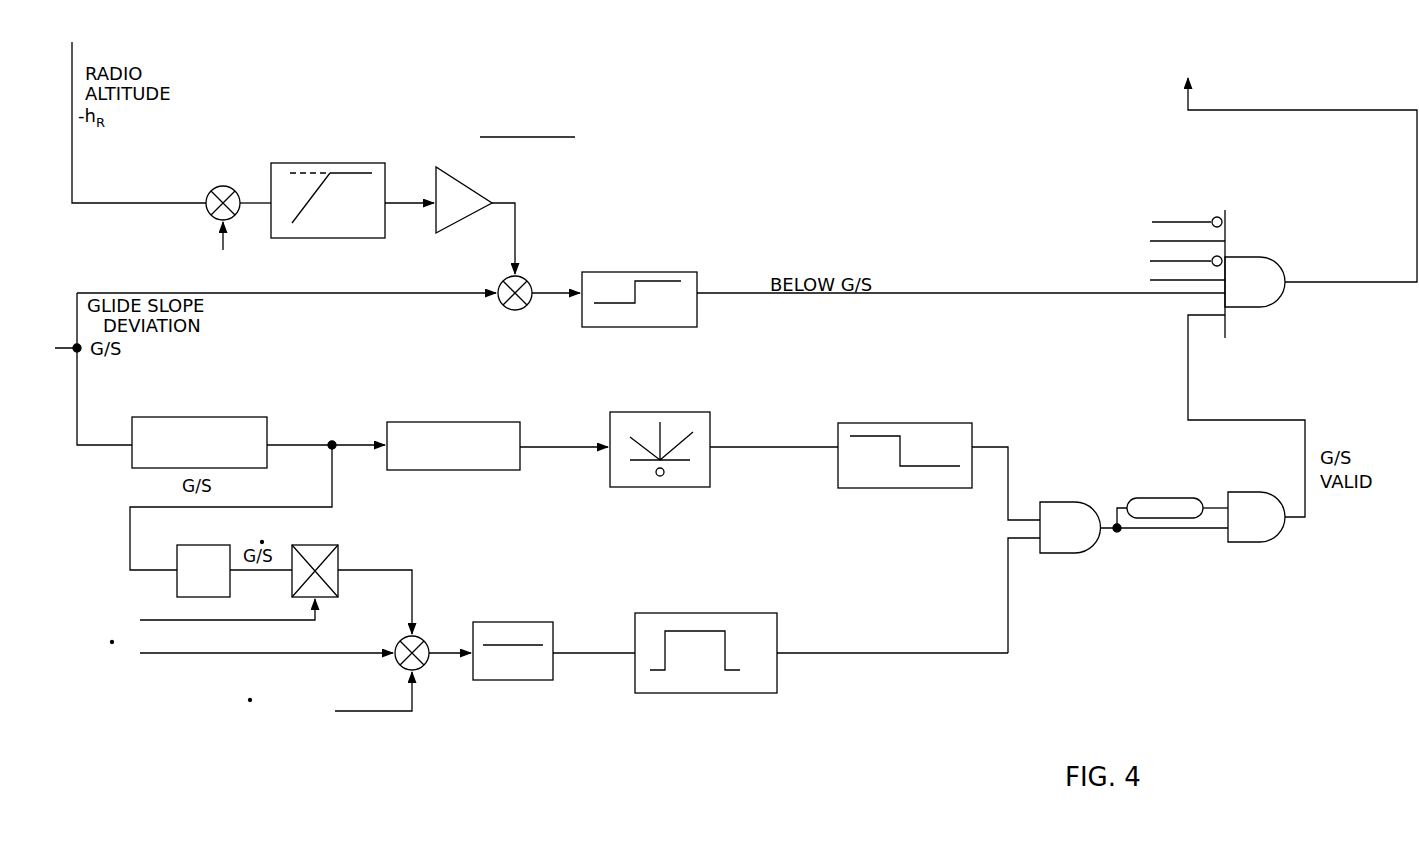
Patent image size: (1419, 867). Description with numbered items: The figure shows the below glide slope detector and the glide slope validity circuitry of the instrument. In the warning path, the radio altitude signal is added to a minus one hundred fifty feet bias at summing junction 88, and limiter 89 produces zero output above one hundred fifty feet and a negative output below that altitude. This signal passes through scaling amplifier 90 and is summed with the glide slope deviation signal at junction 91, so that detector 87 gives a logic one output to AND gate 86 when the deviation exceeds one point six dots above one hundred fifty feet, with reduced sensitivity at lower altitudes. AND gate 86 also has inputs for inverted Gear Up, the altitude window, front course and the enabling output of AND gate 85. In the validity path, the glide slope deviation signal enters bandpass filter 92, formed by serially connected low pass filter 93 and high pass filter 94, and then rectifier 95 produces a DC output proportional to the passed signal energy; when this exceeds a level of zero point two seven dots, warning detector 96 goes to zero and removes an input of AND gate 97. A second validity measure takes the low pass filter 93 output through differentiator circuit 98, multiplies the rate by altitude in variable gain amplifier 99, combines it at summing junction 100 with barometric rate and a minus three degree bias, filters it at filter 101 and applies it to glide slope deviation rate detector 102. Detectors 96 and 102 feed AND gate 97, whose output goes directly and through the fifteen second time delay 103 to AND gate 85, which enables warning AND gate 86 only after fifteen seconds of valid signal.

The AND gate 85 is at (1255, 537).
The AND gate 86 is at (1252, 259).
The detector 87 is at (612, 272).
The summing junction 88 is at (236, 188).
The limiter 89 is at (362, 163).
The scaling amplifier 90 is at (462, 195).
The summing junction 91 is at (518, 309).
The bandpass filter 92 is at (338, 409).
The low pass filter 93 is at (195, 420).
The high pass filter 94 is at (455, 423).
The rectifier 95 is at (685, 412).
The warning detector 96 is at (923, 430).
The AND gate 97 is at (1063, 513).
The differentiator circuit 98 is at (203, 547).
The variable gain amplifier 99 is at (350, 555).
The summing junction 100 is at (428, 668).
The filter 101 is at (527, 633).
The glide slope deviation rate detector 102 is at (710, 620).
The 15 second time delay 103 is at (1155, 495).